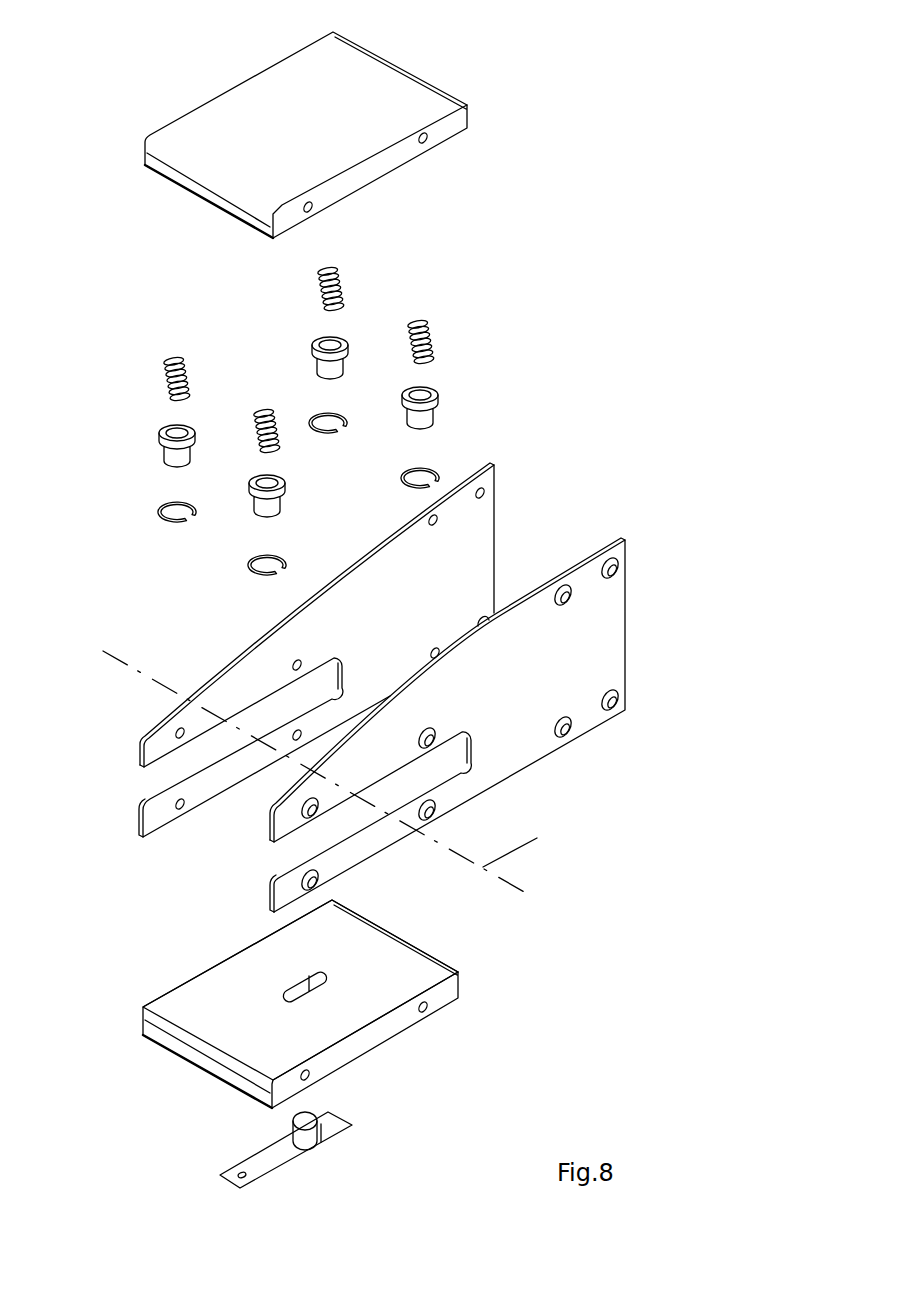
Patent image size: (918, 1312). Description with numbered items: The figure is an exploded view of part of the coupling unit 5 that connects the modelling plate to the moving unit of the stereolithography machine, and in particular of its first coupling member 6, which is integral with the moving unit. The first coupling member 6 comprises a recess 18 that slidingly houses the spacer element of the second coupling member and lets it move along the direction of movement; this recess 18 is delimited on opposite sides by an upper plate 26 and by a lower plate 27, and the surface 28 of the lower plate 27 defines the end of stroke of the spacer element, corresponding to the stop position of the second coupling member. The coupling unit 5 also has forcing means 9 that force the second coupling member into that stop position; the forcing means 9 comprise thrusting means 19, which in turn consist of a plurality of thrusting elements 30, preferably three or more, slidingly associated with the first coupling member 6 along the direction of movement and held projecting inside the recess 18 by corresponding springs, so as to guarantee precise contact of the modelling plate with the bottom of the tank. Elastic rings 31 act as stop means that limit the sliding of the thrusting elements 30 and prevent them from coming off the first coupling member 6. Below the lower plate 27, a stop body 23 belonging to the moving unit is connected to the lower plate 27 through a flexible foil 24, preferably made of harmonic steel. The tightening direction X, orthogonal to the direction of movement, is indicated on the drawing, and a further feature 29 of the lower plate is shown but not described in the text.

The coupling unit 5 is at (590, 132).
The first coupling member 6 is at (597, 642).
The forcing means 9 is at (478, 372).
The recess 18 is at (147, 785).
The thrusting means 19 is at (427, 323).
The stop body 23 is at (307, 1133).
The flexible foil 24 is at (270, 1160).
The upper plate 26 is at (287, 113).
The lower plate 27 is at (408, 1018).
The surface 28 is at (212, 990).
The slot 29 is at (332, 977).
The thrusting elements 30 is at (403, 388).
The elastic rings 31 is at (253, 565).